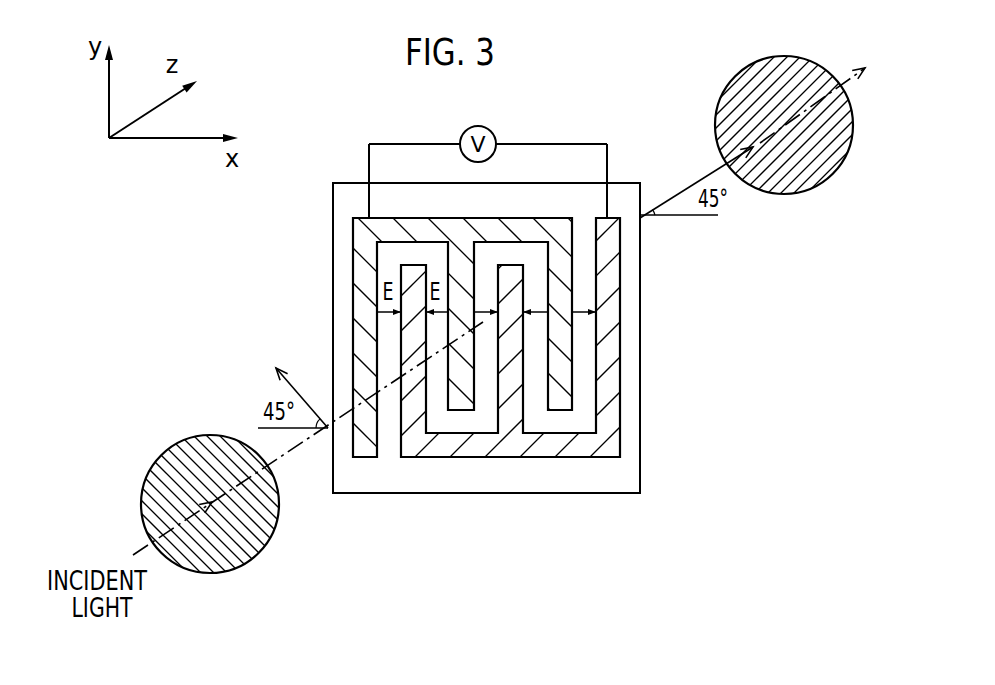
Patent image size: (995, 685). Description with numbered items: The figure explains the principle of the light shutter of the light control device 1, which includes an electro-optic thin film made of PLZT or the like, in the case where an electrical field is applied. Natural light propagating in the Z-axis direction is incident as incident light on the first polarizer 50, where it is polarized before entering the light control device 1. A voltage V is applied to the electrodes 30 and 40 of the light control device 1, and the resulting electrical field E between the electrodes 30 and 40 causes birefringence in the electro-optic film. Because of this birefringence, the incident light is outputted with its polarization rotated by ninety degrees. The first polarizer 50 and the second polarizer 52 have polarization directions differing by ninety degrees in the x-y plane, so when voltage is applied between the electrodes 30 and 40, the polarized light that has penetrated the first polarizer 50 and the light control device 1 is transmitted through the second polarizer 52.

The light control device 1 is at (640, 328).
The electrode 30 is at (360, 242).
The electrode 40 is at (605, 435).
The first polarizer 50 is at (272, 548).
The second polarizer 52 is at (803, 193).